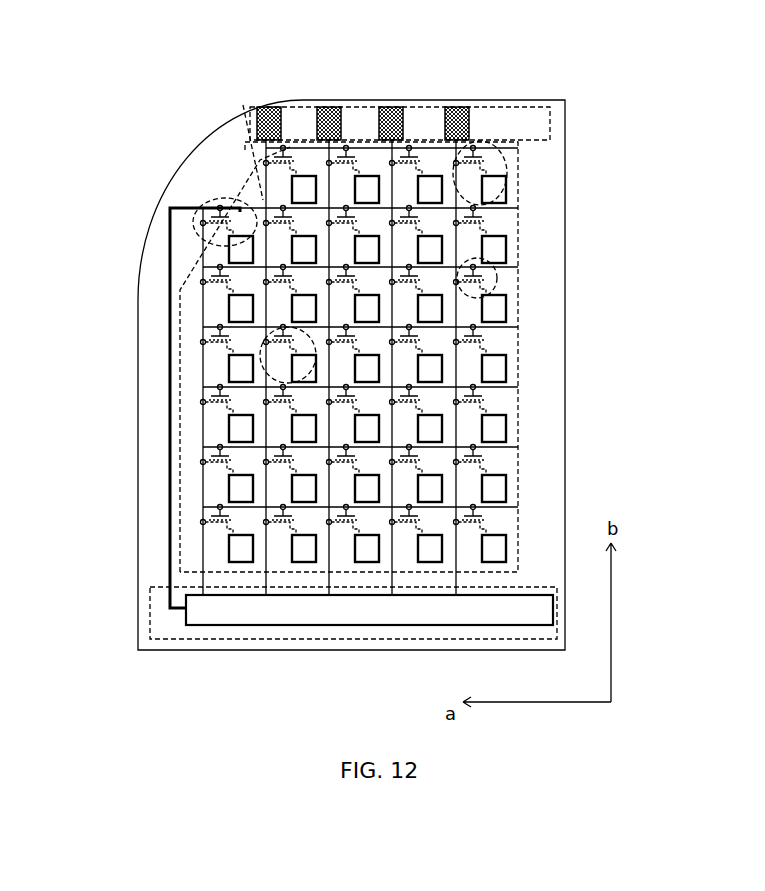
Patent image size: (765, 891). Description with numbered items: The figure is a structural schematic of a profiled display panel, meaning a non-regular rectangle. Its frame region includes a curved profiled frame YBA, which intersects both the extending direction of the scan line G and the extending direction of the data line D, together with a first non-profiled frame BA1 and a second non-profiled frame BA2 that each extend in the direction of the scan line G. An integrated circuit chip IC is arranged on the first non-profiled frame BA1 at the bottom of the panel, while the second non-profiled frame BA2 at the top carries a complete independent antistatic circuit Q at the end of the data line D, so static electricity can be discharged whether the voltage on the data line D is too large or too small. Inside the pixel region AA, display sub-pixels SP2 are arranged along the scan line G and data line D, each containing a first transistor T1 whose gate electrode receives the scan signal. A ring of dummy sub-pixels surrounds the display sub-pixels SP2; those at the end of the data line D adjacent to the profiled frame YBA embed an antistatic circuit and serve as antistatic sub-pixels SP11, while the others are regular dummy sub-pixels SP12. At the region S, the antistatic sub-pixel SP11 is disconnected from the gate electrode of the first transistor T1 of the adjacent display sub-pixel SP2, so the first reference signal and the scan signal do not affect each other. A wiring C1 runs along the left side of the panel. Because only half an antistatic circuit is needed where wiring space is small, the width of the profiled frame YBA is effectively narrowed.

The profiled frame YBA is at (188, 181).
The region S is at (252, 117).
The second non-profiled frame BA2 is at (298, 130).
The pixel region AA is at (367, 140).
The independent antistatic circuit Q is at (456, 106).
The regular dummy sub-pixel SP12 is at (507, 163).
The first transistor T1 is at (515, 268).
The antistatic sub-pixel SP11 is at (203, 247).
The display sub-pixel SP2 is at (267, 364).
The connection line C1 is at (168, 554).
The scan line G is at (518, 388).
The data line D is at (457, 565).
The first non-profiled frame BA1 is at (240, 630).
The integrated circuit chip IC is at (369, 610).